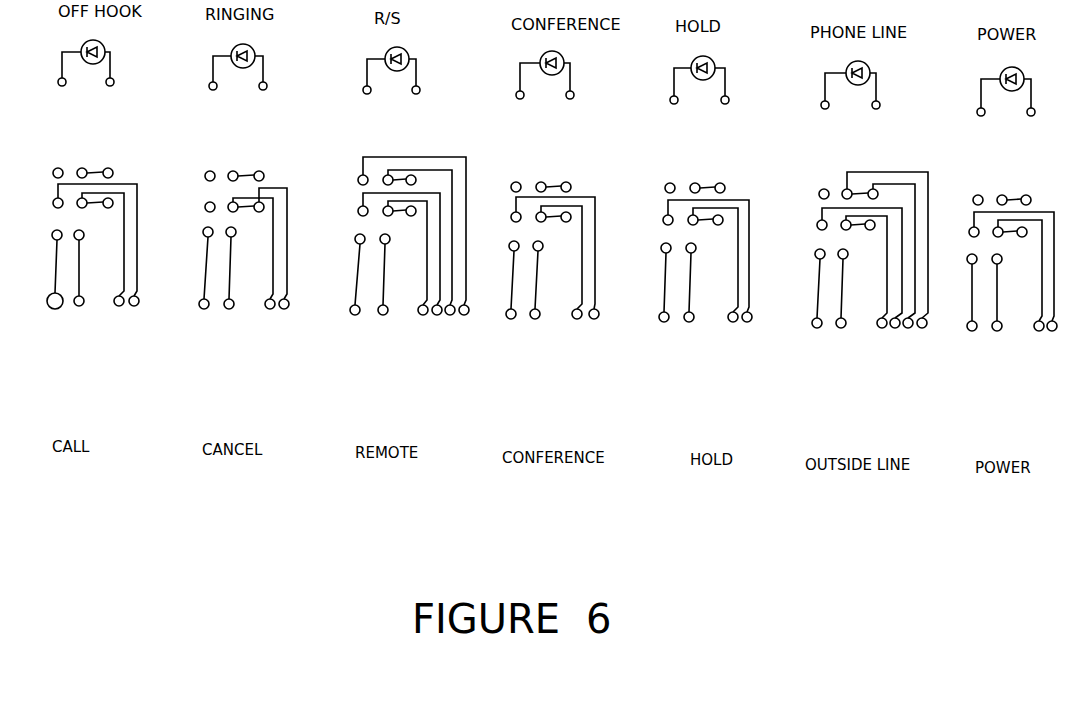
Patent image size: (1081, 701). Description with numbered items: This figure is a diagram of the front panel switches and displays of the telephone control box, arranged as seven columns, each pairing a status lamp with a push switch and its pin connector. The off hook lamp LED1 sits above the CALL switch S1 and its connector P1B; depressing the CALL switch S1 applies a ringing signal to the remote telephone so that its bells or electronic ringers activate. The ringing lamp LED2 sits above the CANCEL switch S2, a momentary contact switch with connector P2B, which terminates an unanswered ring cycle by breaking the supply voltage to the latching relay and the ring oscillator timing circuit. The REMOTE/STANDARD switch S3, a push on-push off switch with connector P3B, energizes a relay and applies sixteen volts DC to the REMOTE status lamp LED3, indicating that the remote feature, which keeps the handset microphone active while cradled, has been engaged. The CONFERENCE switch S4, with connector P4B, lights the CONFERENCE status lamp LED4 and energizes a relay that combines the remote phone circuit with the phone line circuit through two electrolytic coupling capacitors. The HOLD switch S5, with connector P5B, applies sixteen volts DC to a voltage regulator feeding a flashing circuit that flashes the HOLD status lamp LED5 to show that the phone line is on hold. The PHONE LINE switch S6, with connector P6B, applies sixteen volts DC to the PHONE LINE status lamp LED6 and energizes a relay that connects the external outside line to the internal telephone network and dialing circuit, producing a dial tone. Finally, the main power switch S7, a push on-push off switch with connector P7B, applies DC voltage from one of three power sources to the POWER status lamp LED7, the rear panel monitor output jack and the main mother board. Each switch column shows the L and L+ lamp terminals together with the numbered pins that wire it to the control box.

The off hook status lamp LED1 is at (86, 78).
The ringing status lamp LED2 is at (238, 82).
The REMOTE status lamp LED3 is at (391, 84).
The CONFERENCE status lamp LED4 is at (545, 88).
The HOLD status lamp LED5 is at (699, 93).
The PHONE LINE status lamp LED6 is at (850, 97).
The POWER status lamp LED7 is at (1006, 102).
The CALL switch S1 is at (93, 216).
The CANCEL switch S2 is at (244, 218).
The REMOTE/STANDARD switch S3 is at (409, 223).
The CONFERENCE switch S4 is at (552, 226).
The HOLD switch S5 is at (705, 229).
The PHONE LINE switch S6 is at (870, 235).
The main power switch S7 is at (1012, 238).
The call switch connector P1B is at (87, 358).
The cancel switch connector P2B is at (237, 361).
The remote switch connector P3B is at (401, 366).
The conference switch connector P4B is at (546, 372).
The hold switch connector P5B is at (697, 375).
The outside line switch connector P6B is at (860, 380).
The power switch connector P7B is at (1006, 383).